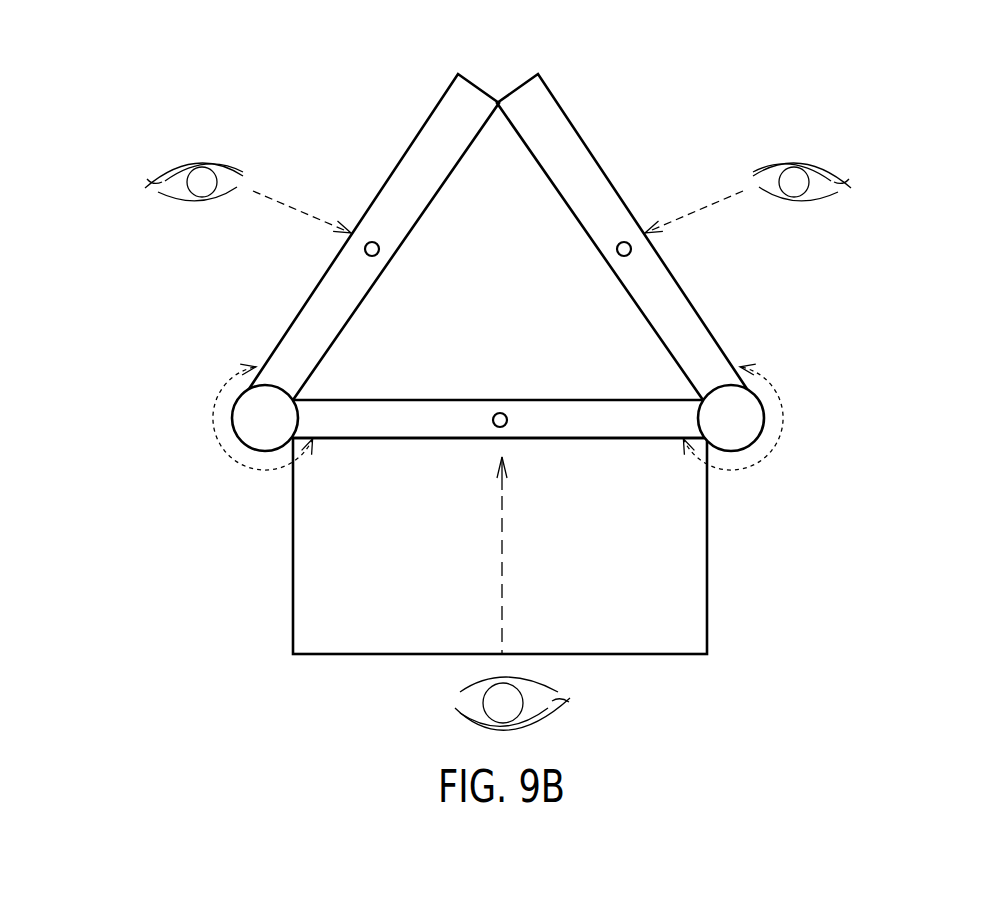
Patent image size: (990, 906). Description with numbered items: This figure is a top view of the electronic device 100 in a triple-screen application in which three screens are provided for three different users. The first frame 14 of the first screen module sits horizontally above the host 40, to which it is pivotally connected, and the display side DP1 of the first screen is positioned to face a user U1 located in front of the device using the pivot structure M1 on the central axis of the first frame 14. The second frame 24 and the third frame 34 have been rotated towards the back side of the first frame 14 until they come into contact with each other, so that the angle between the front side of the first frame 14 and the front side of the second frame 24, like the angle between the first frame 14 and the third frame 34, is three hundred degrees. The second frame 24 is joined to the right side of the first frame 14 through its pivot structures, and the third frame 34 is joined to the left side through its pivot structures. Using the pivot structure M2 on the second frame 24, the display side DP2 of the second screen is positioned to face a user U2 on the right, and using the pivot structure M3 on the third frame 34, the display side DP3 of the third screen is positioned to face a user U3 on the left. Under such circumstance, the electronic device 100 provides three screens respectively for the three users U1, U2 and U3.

The electronic device 100 is at (845, 100).
The display side of the third screen DP3 is at (401, 160).
The display side of the second screen DP2 is at (595, 160).
The display side of the first screen DP1 is at (407, 440).
The third frame 34 is at (372, 237).
The second frame 24 is at (624, 237).
The first frame 14 is at (498, 441).
The host 40 is at (334, 645).
The pivot structure M3 is at (379, 249).
The pivot structure M2 is at (617, 249).
The pivot structure M1 is at (507, 420).
The user U3 is at (241, 187).
The user U2 is at (753, 190).
The user U1 is at (496, 593).